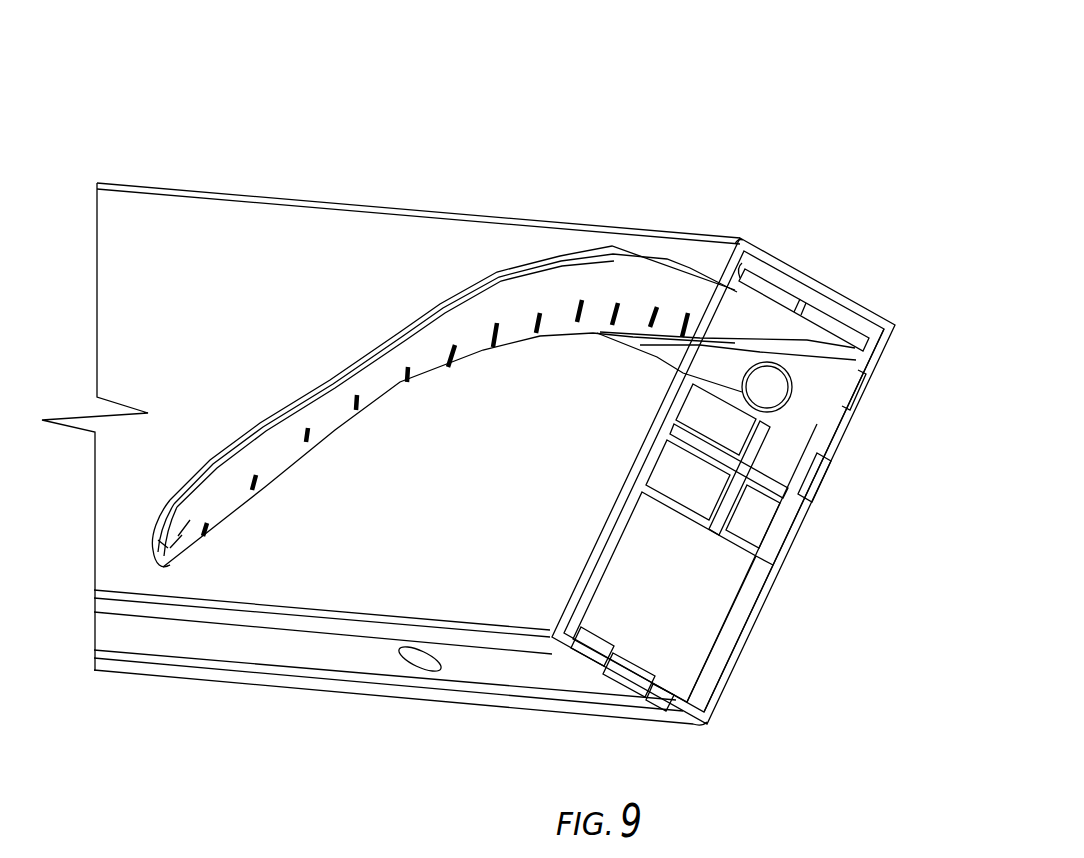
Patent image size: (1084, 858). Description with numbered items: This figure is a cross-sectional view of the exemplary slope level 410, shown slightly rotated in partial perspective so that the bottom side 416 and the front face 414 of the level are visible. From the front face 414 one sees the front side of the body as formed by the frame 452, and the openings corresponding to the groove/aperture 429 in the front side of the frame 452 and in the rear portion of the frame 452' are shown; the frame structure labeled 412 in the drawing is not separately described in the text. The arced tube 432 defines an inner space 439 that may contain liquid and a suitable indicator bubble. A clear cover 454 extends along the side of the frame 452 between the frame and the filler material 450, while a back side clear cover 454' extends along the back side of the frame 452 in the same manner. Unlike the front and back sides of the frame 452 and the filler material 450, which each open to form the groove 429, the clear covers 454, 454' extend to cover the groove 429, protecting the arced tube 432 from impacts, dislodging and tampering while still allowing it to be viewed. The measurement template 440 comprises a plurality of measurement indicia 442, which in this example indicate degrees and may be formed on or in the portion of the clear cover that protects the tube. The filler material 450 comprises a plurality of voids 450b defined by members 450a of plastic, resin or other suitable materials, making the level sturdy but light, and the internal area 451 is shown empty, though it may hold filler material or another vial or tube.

The slope level 410 is at (632, 70).
The frame 452 is at (418, 217).
The front face 414 is at (392, 230).
The measurement template 440 is at (532, 293).
The measurement indicia 442 is at (642, 278).
The clear cover 454 is at (803, 284).
The frame 412 is at (820, 285).
The arced tube 432 is at (783, 377).
The inner space 439 is at (784, 401).
The groove/aperture 429 is at (838, 403).
The back side clear cover 454' is at (875, 436).
The members 450a is at (794, 452).
The voids 450b is at (773, 470).
The filler material 450 is at (727, 517).
The internal area 451 is at (666, 594).
The rear portion of the frame 452' is at (794, 520).
The bottom side 416 is at (210, 643).